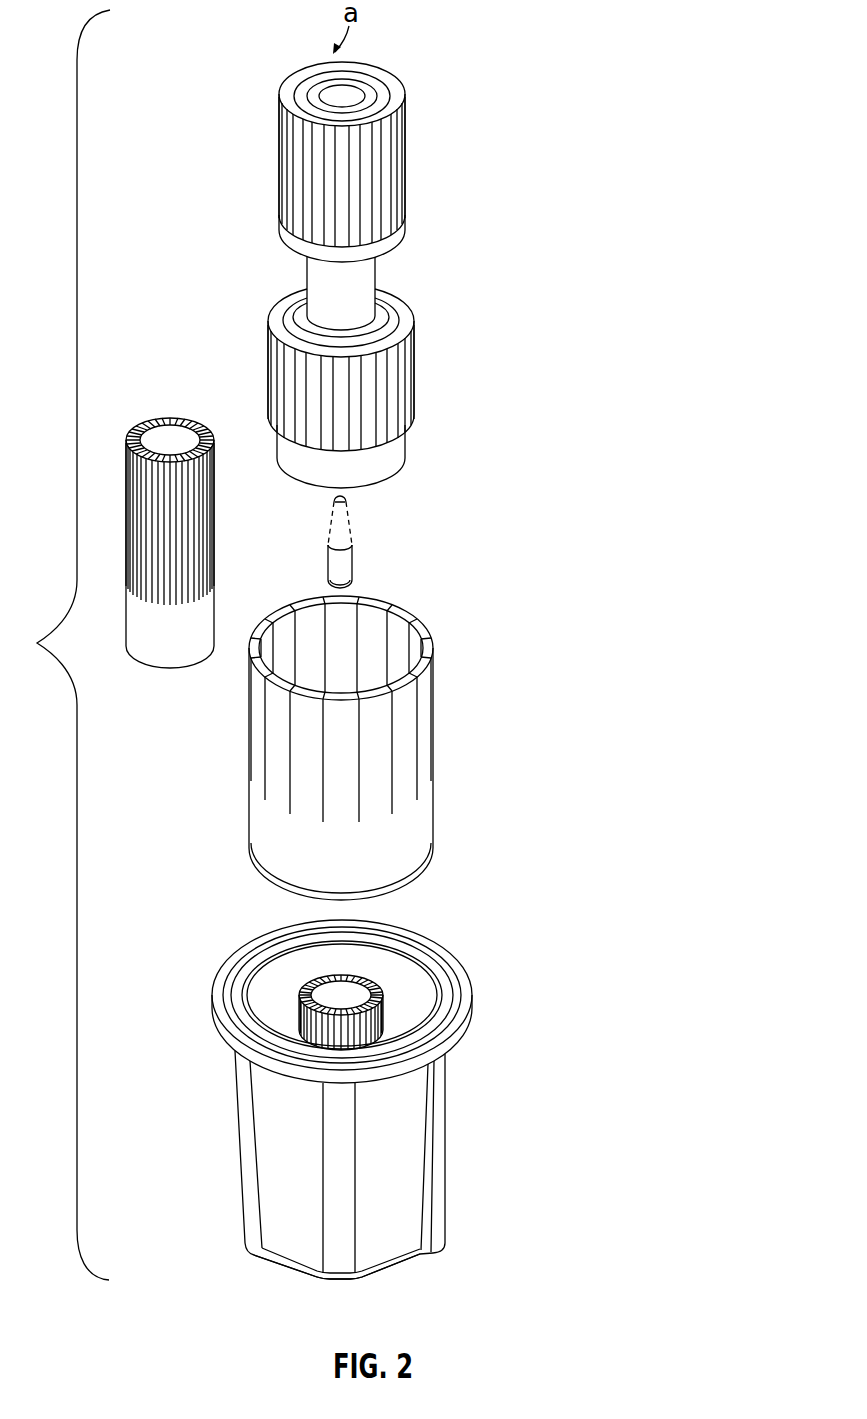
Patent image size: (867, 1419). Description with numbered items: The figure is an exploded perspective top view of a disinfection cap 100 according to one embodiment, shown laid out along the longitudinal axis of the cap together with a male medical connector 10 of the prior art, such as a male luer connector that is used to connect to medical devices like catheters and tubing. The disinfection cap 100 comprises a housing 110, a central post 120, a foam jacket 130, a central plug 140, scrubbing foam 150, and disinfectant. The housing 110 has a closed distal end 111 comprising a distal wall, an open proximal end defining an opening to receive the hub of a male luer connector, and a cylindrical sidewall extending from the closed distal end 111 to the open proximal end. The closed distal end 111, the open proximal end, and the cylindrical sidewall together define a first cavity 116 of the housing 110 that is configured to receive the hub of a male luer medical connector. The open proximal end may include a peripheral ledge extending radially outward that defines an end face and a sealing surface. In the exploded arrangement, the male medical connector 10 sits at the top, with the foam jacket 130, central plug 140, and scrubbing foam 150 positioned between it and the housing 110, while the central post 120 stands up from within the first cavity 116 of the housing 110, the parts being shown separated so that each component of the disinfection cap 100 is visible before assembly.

The disinfection cap 100 is at (505, 40).
The male medical connector 10 is at (407, 173).
The foam jacket 130 is at (160, 415).
The central plug 140 is at (355, 561).
The scrubbing foam 150 is at (270, 817).
The housing 110 is at (307, 1117).
The first cavity 116 is at (393, 977).
The central post 120 is at (297, 1003).
The closed distal end 111 is at (292, 1263).